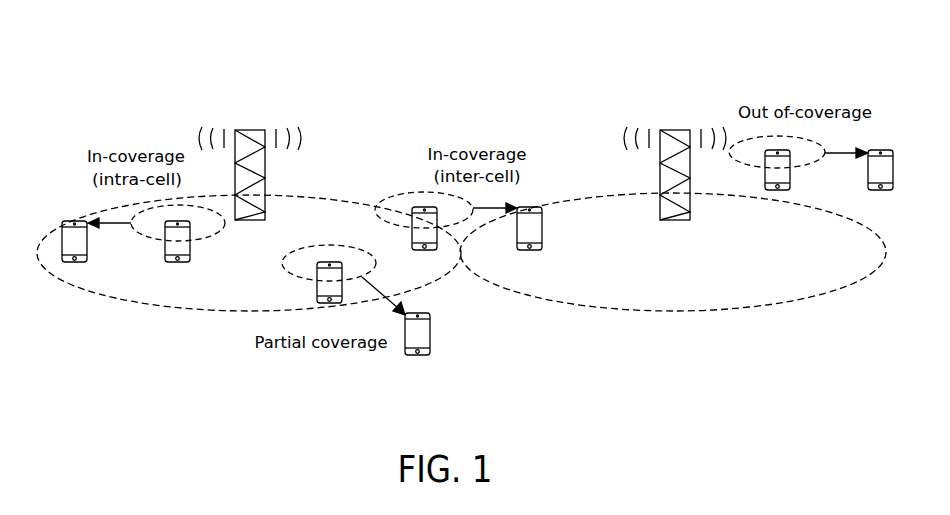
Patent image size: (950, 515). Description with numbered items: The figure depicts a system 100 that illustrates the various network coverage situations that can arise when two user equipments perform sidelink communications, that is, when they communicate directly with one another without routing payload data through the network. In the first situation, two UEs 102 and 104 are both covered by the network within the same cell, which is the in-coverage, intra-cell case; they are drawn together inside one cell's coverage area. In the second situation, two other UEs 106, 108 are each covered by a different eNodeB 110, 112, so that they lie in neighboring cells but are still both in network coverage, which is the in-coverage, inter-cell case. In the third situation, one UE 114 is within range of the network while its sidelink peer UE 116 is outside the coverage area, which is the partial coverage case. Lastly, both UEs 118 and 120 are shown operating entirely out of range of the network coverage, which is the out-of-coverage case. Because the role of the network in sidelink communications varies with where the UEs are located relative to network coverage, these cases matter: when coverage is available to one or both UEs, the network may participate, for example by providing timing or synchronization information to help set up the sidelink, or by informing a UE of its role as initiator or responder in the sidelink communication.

The system 100 is at (375, 24).
The user equipment 102 is at (73, 262).
The user equipment 104 is at (176, 262).
The user equipment 106 is at (420, 207).
The user equipment 108 is at (527, 207).
The eNodeB 110 is at (248, 130).
The eNodeB 112 is at (672, 130).
The user equipment 114 is at (318, 283).
The user equipment 116 is at (430, 333).
The user equipment 118 is at (790, 170).
The user equipment 120 is at (880, 150).